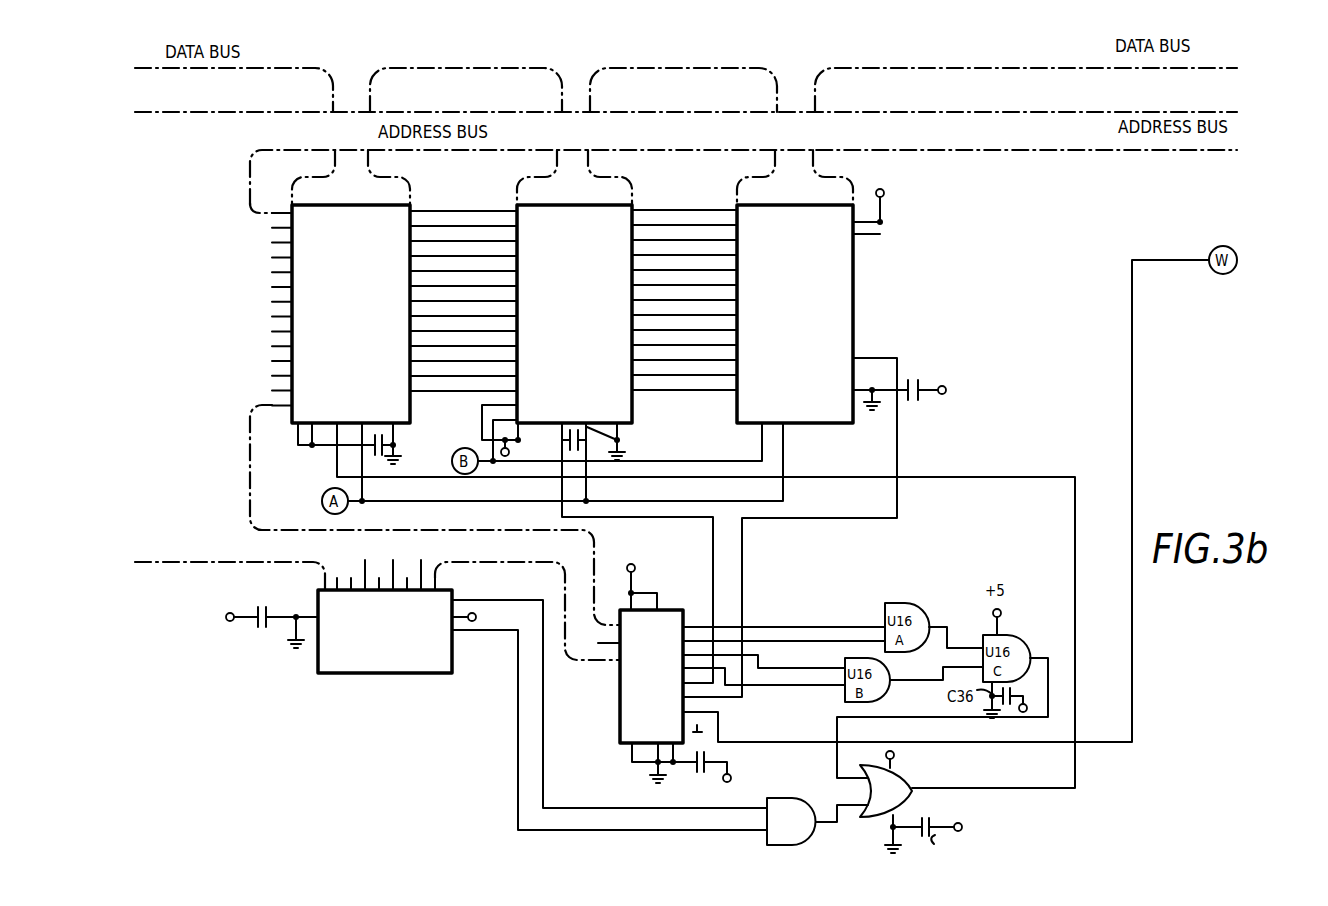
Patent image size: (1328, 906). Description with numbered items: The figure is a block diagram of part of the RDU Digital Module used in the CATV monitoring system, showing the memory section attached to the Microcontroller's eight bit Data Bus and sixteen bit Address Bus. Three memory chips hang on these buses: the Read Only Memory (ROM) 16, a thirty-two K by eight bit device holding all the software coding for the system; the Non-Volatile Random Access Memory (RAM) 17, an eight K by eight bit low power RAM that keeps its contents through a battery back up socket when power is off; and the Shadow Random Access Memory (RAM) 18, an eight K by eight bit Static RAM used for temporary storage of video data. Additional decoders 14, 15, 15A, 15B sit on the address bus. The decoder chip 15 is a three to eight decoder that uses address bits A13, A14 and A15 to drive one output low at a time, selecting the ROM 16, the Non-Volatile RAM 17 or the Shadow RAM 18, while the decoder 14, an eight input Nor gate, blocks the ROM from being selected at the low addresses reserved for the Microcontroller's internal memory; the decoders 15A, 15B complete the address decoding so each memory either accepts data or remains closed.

The Read Only Memory (ROM) 16 is at (352, 405).
The Non-Volatile Random Access Memory (RAM) 17 is at (581, 408).
The Shadow Random Access Memory (RAM) 18 is at (798, 365).
The decoder 14 is at (423, 667).
The decoder chip 15 is at (653, 731).
The decoder 15A is at (793, 802).
The decoder 15B is at (900, 783).